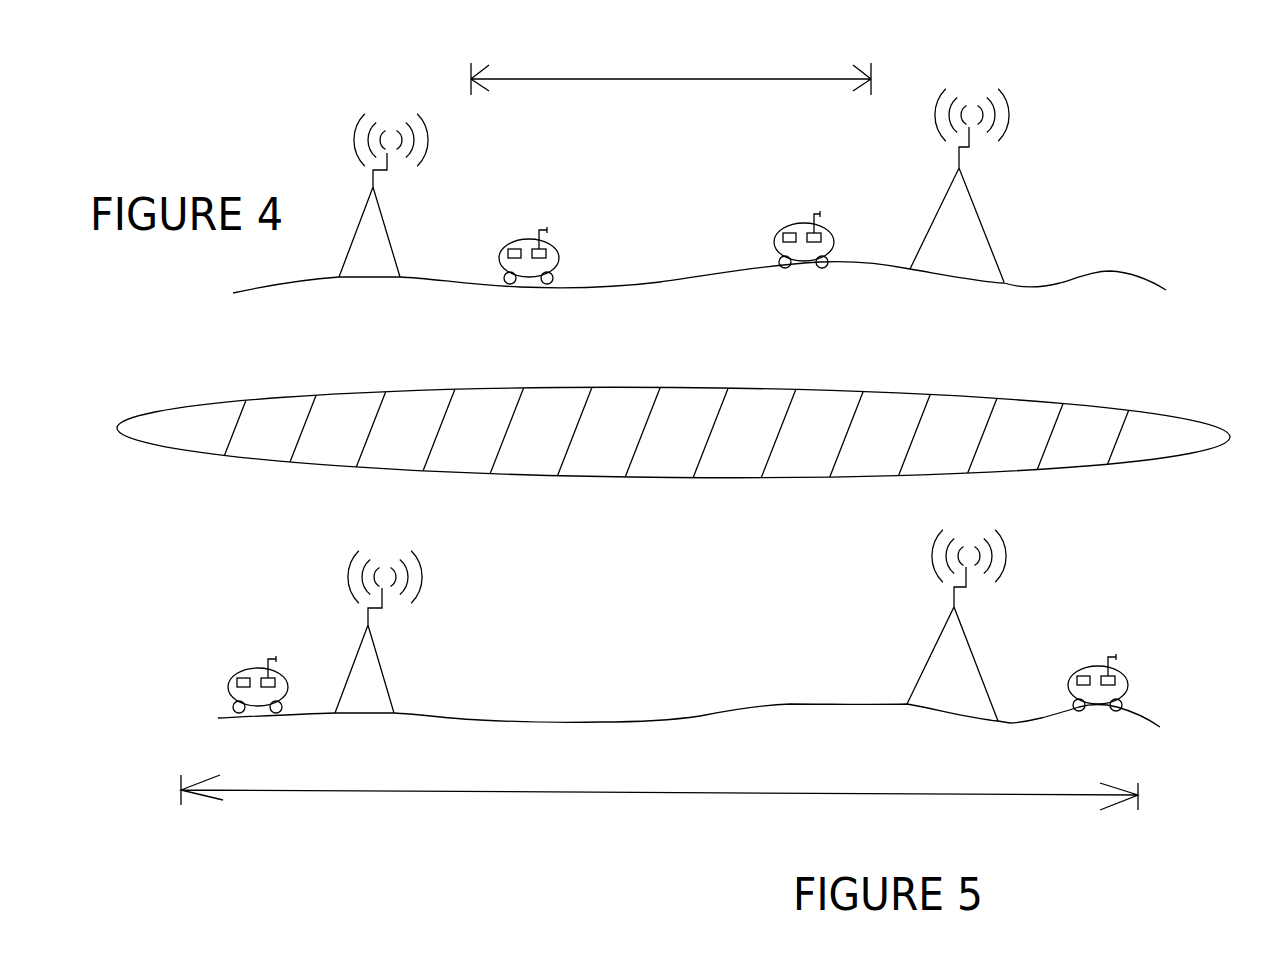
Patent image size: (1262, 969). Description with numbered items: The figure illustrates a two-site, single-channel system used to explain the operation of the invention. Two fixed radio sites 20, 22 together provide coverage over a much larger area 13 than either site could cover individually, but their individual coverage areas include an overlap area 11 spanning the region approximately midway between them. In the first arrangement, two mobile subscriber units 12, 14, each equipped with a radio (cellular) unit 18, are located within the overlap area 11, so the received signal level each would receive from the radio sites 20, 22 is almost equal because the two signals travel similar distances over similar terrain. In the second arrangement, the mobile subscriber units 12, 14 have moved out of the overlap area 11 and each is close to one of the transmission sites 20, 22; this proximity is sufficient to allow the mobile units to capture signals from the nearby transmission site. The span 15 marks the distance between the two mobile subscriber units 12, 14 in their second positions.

In FIG. 4, the overlap area 11 is at (645, 79).
In FIG. 4, the mobile subscriber unit 12 is at (520, 240).
In FIG. 5, the mobile subscriber unit 12 is at (250, 669).
In FIG. 4, the coverage area 13 is at (232, 455).
In FIG. 4, the mobile subscriber unit 14 is at (795, 224).
In FIG. 5, the mobile subscriber unit 14 is at (1088, 667).
In FIG. 5, the distance between mobile units 15 is at (578, 793).
In FIG. 4, the radio unit 18 is at (546, 245).
In FIG. 5, the radio unit 18 is at (276, 677).
In FIG. 4, the fixed radio site 20 is at (374, 303).
In FIG. 5, the fixed radio site 20 is at (374, 743).
In FIG. 4, the fixed radio site 22 is at (959, 313).
In FIG. 5, the fixed radio site 22 is at (957, 755).